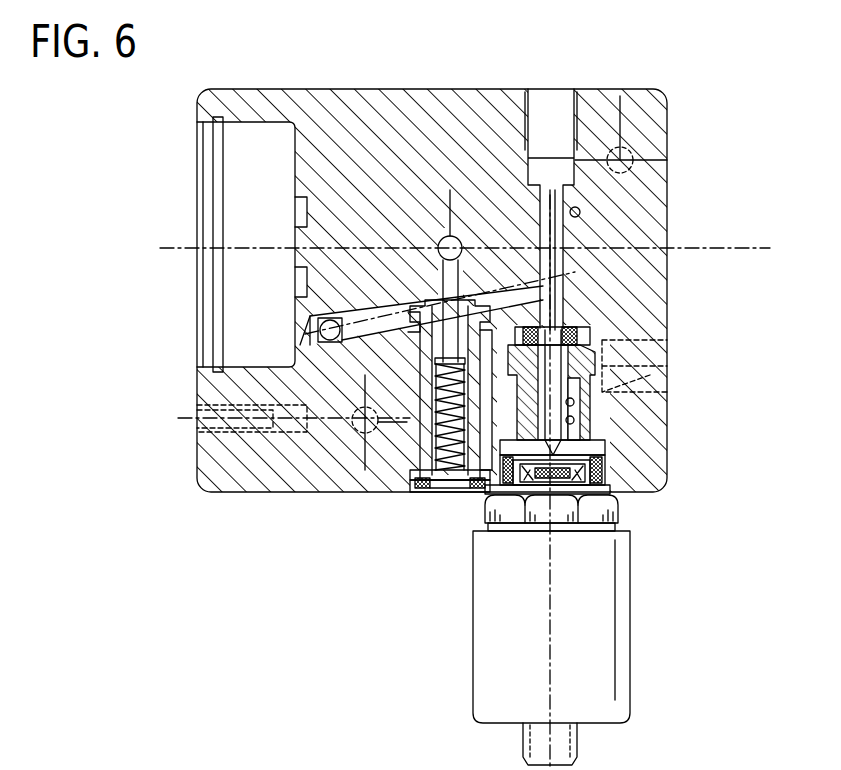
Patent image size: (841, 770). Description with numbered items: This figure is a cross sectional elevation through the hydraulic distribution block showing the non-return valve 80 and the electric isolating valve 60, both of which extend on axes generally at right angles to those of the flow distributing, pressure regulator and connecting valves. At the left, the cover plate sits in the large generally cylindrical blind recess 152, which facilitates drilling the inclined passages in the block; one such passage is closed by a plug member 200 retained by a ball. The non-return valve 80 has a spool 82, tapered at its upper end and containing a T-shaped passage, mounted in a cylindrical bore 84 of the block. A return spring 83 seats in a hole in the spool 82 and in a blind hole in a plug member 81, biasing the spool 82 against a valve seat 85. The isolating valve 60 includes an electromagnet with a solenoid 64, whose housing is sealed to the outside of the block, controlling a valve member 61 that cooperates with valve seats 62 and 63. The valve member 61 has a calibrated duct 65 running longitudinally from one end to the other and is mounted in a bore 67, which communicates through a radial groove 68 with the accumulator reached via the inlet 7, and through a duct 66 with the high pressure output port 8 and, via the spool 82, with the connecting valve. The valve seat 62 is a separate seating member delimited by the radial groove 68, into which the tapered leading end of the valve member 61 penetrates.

The high pressure output port 8 is at (568, 80).
The blind recess 152 is at (245, 367).
The plug member 200 is at (305, 338).
The valve seat 85 is at (432, 268).
The cylindrical bore 84 is at (547, 302).
The duct 66 is at (582, 214).
The spool 82 is at (428, 372).
The non-return valve 80 is at (440, 432).
The plug member 81 is at (456, 446).
The return spring 83 is at (448, 445).
The valve seat 62 is at (585, 340).
The calibrated duct 65 is at (648, 420).
The bore 67 is at (598, 378).
The radial groove 68 is at (583, 362).
The inlet 7 is at (650, 378).
The valve member 61 is at (605, 494).
The valve seat 63 is at (528, 531).
The solenoid 64 is at (473, 610).
The electric isolating valve 60 is at (564, 482).